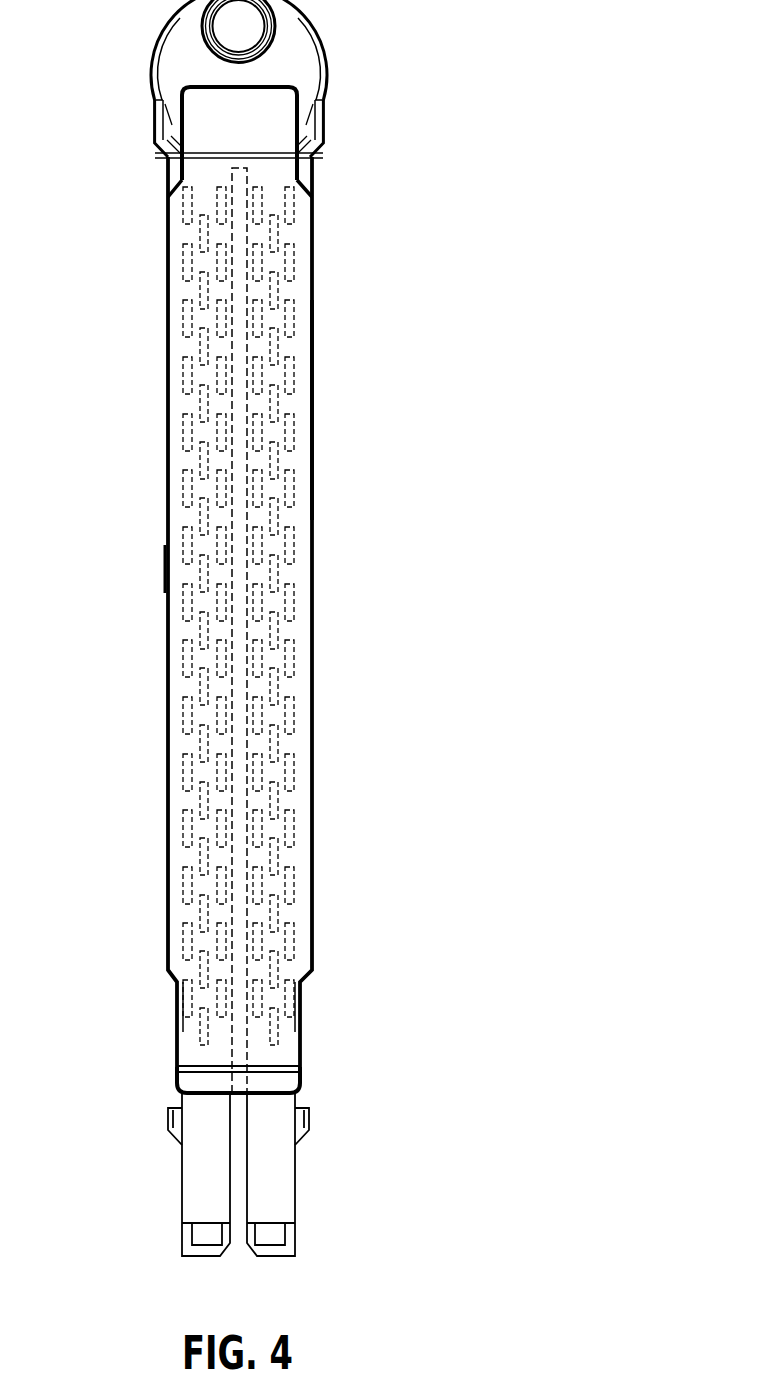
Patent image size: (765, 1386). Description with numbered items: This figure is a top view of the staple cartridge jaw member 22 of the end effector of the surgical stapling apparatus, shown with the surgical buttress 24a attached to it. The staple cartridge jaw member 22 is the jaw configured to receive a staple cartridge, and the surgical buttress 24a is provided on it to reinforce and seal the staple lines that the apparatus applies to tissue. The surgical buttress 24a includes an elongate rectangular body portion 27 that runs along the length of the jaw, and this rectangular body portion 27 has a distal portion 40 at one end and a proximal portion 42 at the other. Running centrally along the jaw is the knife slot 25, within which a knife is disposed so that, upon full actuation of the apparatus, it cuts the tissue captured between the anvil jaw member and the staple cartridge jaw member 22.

The staple cartridge jaw member 22 is at (167, 890).
The surgical buttress 24a is at (296, 404).
The knife slot 25 is at (237, 735).
The elongate rectangular body portion 27 is at (290, 572).
The distal portion 40 is at (288, 172).
The proximal portion 42 is at (287, 1048).